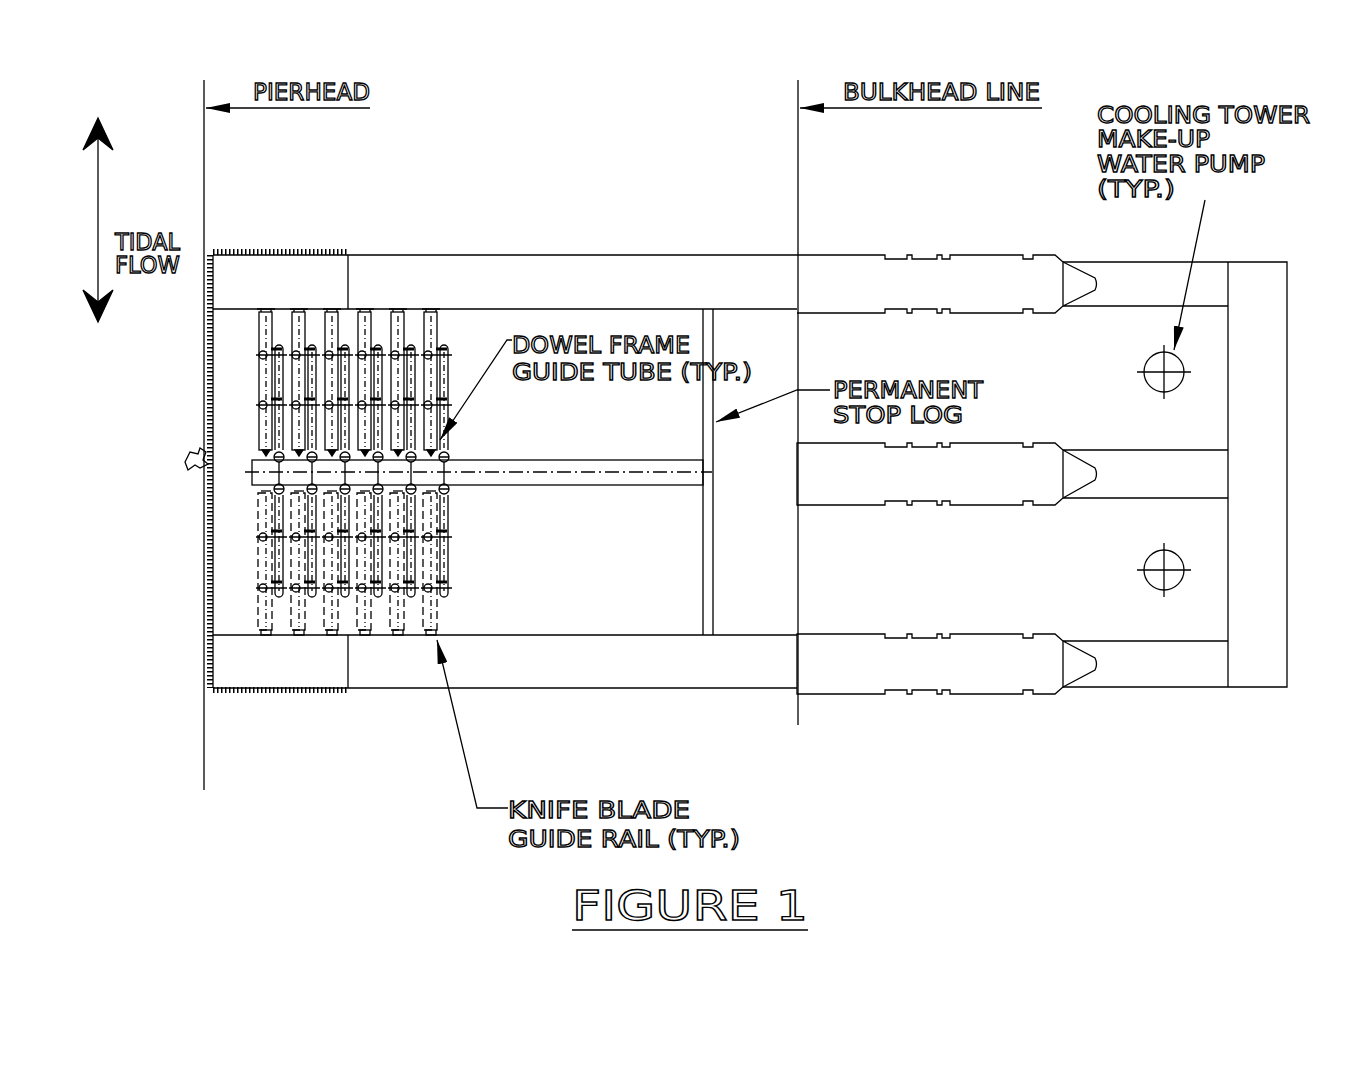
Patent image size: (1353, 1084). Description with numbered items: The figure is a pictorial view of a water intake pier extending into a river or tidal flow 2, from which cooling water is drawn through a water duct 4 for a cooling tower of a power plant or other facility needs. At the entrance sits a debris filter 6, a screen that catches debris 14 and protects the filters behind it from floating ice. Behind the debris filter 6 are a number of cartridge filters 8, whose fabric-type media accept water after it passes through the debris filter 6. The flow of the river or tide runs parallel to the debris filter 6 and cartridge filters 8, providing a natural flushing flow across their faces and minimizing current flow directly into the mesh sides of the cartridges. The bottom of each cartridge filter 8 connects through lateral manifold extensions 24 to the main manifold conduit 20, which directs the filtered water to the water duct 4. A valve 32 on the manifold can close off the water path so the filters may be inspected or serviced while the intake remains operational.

The river or tidal flow 2 is at (139, 453).
The water duct 4 is at (827, 363).
The debris filter 6 is at (258, 697).
The cartridge filters 8 is at (277, 332).
The debris 14 is at (192, 472).
The manifold conduit 20 is at (655, 490).
The lateral manifold extensions 24 is at (447, 577).
The valve 32 is at (447, 513).